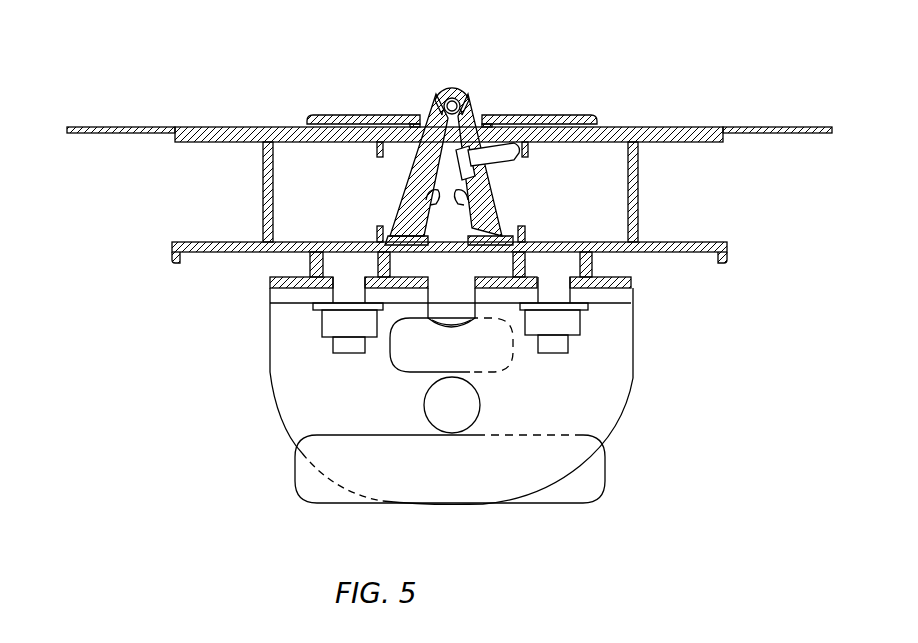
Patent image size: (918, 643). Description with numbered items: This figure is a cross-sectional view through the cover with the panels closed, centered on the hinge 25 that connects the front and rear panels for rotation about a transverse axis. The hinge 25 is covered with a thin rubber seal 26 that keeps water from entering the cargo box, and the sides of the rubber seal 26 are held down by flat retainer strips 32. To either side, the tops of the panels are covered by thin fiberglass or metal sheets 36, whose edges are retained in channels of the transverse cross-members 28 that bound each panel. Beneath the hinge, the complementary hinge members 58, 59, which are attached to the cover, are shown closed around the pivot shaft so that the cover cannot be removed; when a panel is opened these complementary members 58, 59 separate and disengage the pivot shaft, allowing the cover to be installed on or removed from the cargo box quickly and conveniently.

The hinge 25 is at (428, 110).
The rubber seal 26 is at (458, 88).
The inner transverse cross-member 28 is at (198, 242).
The flat retainer strips 32 is at (358, 114).
The sheets 36 is at (153, 127).
The complementary hinge member 58 is at (633, 380).
The complementary hinge member 59 is at (275, 368).